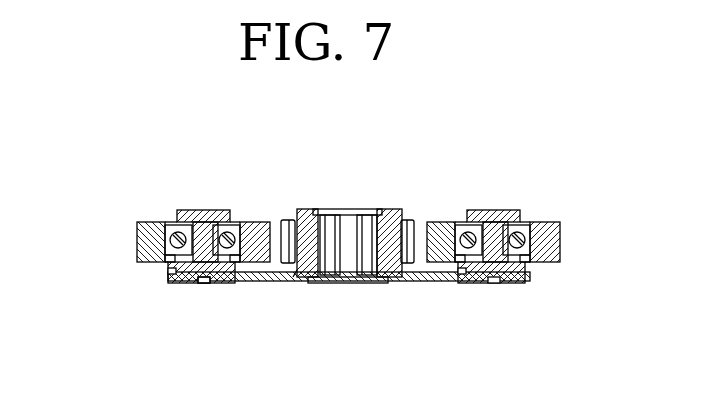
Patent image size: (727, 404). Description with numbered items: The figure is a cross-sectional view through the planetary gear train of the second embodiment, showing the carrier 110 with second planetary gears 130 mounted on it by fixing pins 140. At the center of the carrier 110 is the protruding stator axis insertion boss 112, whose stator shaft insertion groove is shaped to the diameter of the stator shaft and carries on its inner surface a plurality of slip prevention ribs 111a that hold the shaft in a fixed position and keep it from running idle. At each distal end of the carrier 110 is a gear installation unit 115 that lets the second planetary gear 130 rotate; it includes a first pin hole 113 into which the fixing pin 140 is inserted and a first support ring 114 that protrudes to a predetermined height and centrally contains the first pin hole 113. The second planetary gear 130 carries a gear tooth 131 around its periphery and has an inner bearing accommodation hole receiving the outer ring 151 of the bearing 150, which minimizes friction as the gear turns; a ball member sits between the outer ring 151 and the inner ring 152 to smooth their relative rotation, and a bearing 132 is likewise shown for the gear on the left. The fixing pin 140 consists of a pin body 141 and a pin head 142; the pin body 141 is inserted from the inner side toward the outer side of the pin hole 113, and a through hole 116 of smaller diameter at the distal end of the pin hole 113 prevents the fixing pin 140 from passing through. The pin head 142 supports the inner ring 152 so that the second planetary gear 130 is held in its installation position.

The carrier 110 is at (280, 281).
The slip prevention ribs 111a is at (346, 225).
The stator axis insertion boss 112 is at (385, 212).
The first pin hole 113 is at (178, 283).
The first support ring 114 is at (166, 272).
The gear installation unit 115 is at (140, 267).
The through hole 116 is at (205, 283).
The second planetary gear 130 is at (144, 226).
The gear tooth 131 is at (140, 222).
The bearing 132 is at (165, 252).
The fixing pin 140 is at (473, 293).
The pin body 141 is at (492, 272).
The pin head 142 is at (447, 294).
The bearing 150 is at (550, 256).
The outer ring 151 is at (548, 238).
The inner ring 152 is at (546, 262).